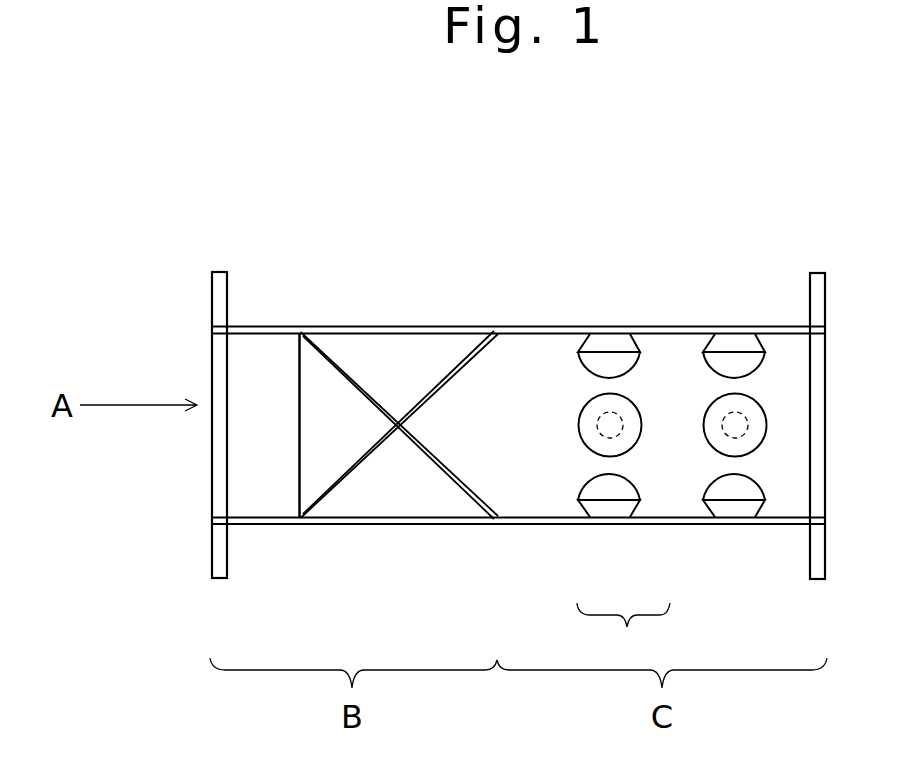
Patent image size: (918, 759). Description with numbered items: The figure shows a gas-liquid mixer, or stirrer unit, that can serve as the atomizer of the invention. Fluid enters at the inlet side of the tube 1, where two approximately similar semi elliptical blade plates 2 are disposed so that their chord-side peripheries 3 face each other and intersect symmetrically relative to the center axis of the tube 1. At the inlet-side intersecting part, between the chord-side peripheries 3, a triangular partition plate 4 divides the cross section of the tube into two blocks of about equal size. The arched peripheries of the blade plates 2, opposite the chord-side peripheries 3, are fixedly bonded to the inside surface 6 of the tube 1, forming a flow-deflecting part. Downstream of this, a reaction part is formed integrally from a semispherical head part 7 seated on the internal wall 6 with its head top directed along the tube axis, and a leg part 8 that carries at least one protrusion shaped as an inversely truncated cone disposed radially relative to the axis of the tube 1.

The tube 1 is at (260, 325).
The semi elliptical blade plates 2 is at (343, 359).
The chord-side peripheries 3 is at (450, 360).
The triangular partition plate 4 is at (322, 398).
The inside surface of the tube 6 is at (405, 489).
The semispherical head part 7 is at (618, 487).
The leg part 8 is at (602, 507).